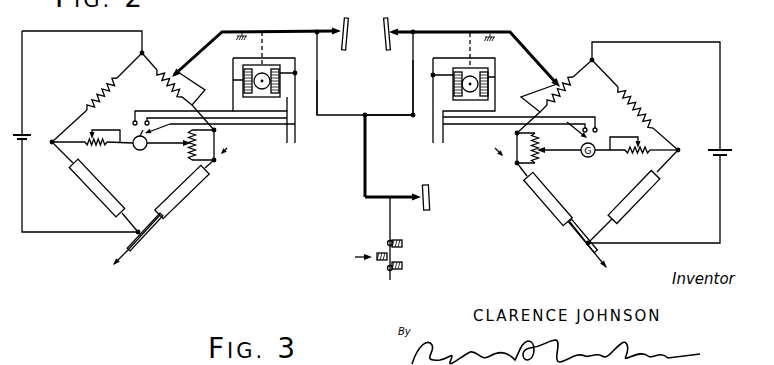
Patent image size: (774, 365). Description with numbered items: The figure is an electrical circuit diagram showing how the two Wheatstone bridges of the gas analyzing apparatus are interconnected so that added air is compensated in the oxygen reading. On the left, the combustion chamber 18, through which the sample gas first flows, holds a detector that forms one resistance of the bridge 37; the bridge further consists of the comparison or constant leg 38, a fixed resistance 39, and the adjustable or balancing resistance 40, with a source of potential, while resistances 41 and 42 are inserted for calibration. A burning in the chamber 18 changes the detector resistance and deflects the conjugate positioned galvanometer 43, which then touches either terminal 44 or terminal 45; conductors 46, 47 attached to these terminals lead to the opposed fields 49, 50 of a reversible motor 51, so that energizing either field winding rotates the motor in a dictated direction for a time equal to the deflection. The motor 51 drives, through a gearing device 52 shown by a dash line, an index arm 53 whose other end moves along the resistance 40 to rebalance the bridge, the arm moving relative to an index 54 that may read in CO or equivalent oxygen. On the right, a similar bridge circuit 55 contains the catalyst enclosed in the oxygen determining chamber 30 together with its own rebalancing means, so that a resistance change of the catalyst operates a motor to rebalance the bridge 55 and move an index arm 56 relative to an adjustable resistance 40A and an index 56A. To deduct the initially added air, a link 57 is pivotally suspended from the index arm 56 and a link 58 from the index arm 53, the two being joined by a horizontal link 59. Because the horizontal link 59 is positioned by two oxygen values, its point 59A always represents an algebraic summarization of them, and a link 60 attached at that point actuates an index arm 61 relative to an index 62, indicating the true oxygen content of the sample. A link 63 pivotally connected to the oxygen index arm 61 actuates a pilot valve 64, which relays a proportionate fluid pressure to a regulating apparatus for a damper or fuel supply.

The combustion chamber 18 is at (193, 196).
The oxygen determining chamber 30 is at (548, 213).
The bridge 37 is at (50, 121).
The comparison leg 38 is at (88, 199).
The fixed resistance 39 is at (93, 97).
The adjustable resistance 40 is at (170, 74).
The adjustable resistance 40A is at (562, 96).
The calibration resistance 41 is at (97, 148).
The calibration resistance 42 is at (186, 150).
The galvanometer 43 is at (135, 151).
The terminal 44 is at (132, 121).
The terminal 45 is at (147, 116).
The conductor 46 is at (198, 110).
The conductor 47 is at (240, 126).
The field 49 is at (241, 78).
The field 50 is at (287, 84).
The reversible motor 51 is at (298, 53).
The gearing device 52 is at (264, 37).
The index arm 53 is at (303, 30).
The index 54 is at (348, 22).
The bridge circuit 55 is at (747, 134).
The index arm 56 is at (453, 31).
The index 56A is at (391, 22).
The link 57 is at (412, 78).
The link 58 is at (318, 95).
The horizontal link 59 is at (362, 120).
The point 59A is at (366, 114).
The link 60 is at (363, 178).
The index arm 61 is at (382, 196).
The index 62 is at (430, 190).
The link 63 is at (389, 222).
The pilot valve 64 is at (434, 265).